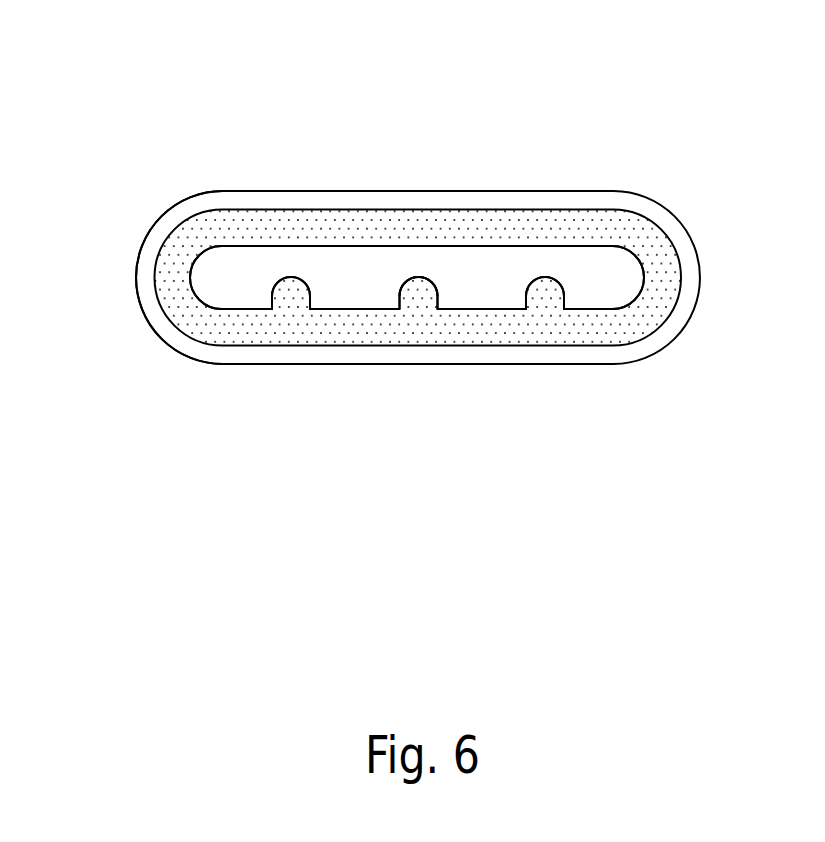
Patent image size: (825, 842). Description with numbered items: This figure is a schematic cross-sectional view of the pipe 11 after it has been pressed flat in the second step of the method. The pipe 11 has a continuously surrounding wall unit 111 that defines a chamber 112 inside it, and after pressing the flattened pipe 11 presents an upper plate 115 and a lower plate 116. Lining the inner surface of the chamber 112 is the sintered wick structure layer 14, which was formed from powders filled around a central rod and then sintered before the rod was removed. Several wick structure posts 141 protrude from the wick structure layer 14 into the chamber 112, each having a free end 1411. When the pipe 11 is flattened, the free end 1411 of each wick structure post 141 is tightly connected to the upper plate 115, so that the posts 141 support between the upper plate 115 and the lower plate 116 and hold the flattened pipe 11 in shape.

The pipe 11 is at (421, 152).
The surrounding wall unit 111 is at (185, 208).
The upper plate 115 is at (552, 190).
The lower plate 116 is at (548, 366).
The chamber 112 is at (590, 265).
The wick structure layer 14 is at (472, 328).
The wick structure post 141 is at (418, 290).
The free end 1411 is at (428, 282).